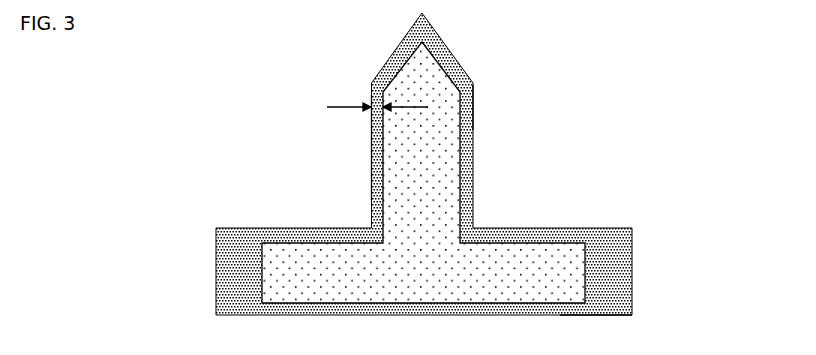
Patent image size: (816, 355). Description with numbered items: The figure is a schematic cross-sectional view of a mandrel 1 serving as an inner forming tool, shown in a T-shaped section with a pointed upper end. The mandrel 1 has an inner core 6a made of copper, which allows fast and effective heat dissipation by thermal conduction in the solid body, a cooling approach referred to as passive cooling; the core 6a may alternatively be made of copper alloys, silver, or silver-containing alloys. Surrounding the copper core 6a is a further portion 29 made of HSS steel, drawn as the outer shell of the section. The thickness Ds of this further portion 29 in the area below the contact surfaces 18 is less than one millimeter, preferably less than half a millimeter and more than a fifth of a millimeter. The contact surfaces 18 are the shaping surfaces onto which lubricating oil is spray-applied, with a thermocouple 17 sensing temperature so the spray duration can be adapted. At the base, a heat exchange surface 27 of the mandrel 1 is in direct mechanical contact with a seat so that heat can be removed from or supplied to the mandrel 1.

The mandrel 1 is at (417, 164).
The thermocouple 17 is at (370, 148).
The contact surfaces 18 is at (370, 195).
The further portion 29 is at (475, 110).
The inner core 6a is at (452, 190).
The heat exchange surface 27 is at (602, 313).
The thickness Ds is at (372, 92).